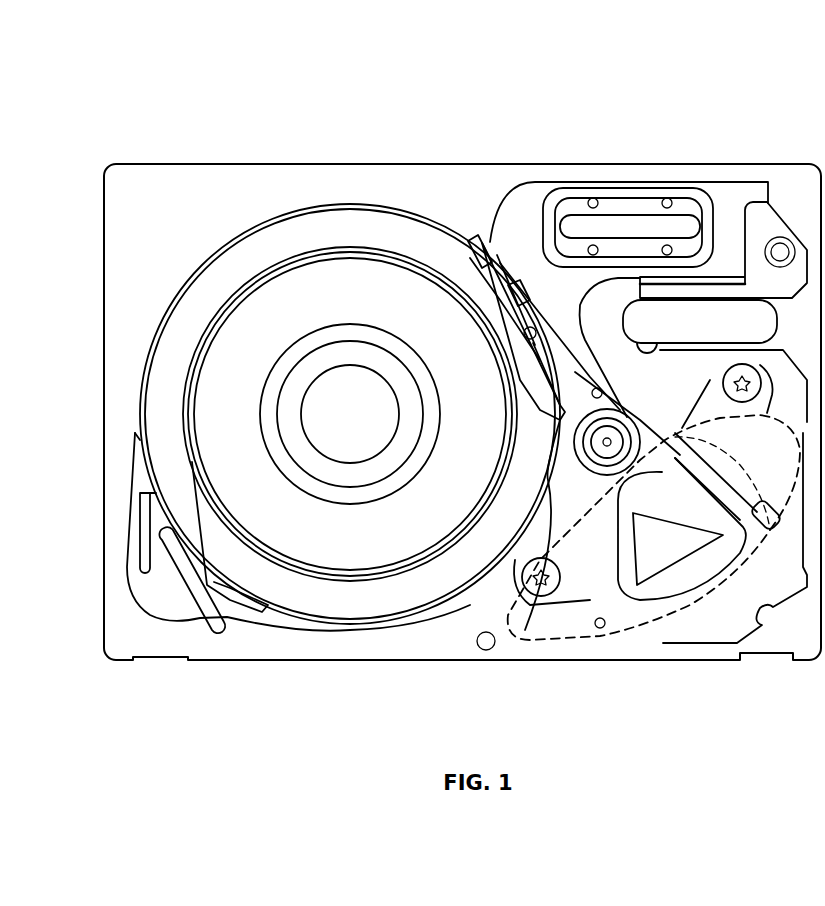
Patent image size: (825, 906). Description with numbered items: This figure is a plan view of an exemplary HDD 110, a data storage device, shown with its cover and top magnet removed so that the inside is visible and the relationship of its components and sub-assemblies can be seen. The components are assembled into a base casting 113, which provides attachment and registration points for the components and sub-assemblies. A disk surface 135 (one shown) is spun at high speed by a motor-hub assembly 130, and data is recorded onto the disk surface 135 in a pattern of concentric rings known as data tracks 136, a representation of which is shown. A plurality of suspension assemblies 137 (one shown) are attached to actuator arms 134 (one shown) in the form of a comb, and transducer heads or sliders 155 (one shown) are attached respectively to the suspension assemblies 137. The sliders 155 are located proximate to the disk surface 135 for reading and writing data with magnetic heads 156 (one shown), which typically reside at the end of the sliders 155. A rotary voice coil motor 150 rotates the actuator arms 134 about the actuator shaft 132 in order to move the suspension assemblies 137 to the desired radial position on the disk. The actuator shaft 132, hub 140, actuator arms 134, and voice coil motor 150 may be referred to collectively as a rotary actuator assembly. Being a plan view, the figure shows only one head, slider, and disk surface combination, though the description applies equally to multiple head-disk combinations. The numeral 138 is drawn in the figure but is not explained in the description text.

The HDD 110 is at (190, 117).
The base casting 113 is at (124, 372).
The motor-hub assembly 130 is at (353, 408).
The actuator shaft 132 is at (607, 447).
The actuator arm 134 is at (557, 340).
The disk surface 135 is at (267, 262).
The data tracks 136 is at (193, 463).
The suspension assembly 137 is at (492, 268).
The disk surface 138 is at (233, 260).
The hub 140 is at (575, 462).
The rotary voice coil motor 150 is at (655, 613).
The slider 155 is at (478, 262).
The magnetic head 156 is at (455, 245).